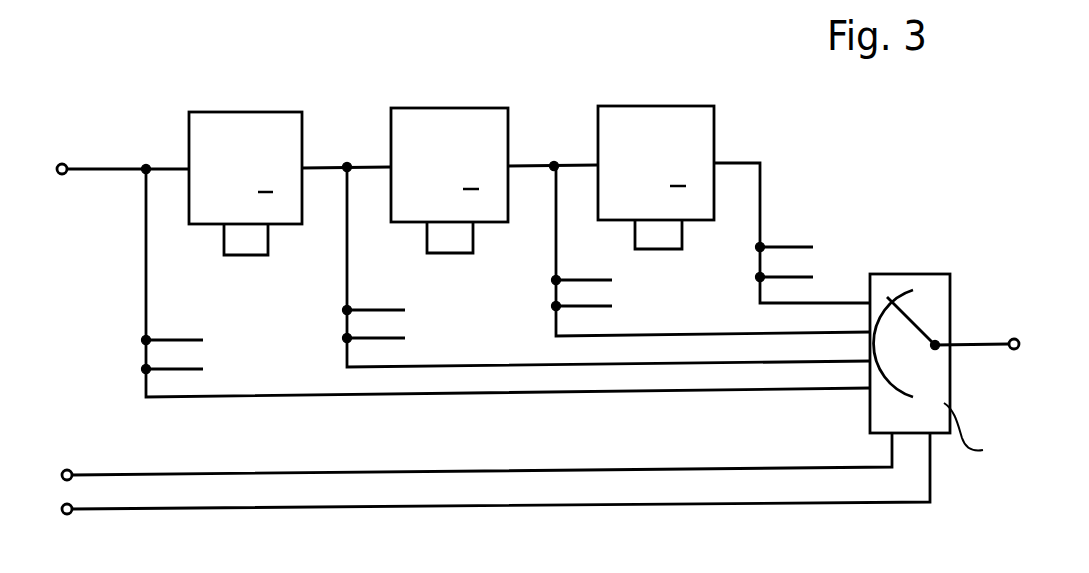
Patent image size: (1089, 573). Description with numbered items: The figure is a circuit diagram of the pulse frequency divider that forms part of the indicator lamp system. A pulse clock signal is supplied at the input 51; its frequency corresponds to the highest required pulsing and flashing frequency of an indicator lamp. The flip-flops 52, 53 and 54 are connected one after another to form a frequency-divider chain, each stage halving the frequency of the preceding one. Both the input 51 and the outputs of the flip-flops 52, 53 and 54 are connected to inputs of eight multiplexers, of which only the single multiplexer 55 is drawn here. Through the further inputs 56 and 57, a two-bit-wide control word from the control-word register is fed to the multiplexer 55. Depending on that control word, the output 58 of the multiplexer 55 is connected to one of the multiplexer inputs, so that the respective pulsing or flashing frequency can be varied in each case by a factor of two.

The pulse clock signal input 51 is at (58, 166).
The flip-flop 52 is at (258, 120).
The flip-flop 53 is at (464, 118).
The flip-flop 54 is at (669, 115).
The multiplexer 55 is at (931, 286).
The control-word input 56 is at (60, 473).
The control-word input 57 is at (60, 511).
The multiplexer output 58 is at (1028, 318).